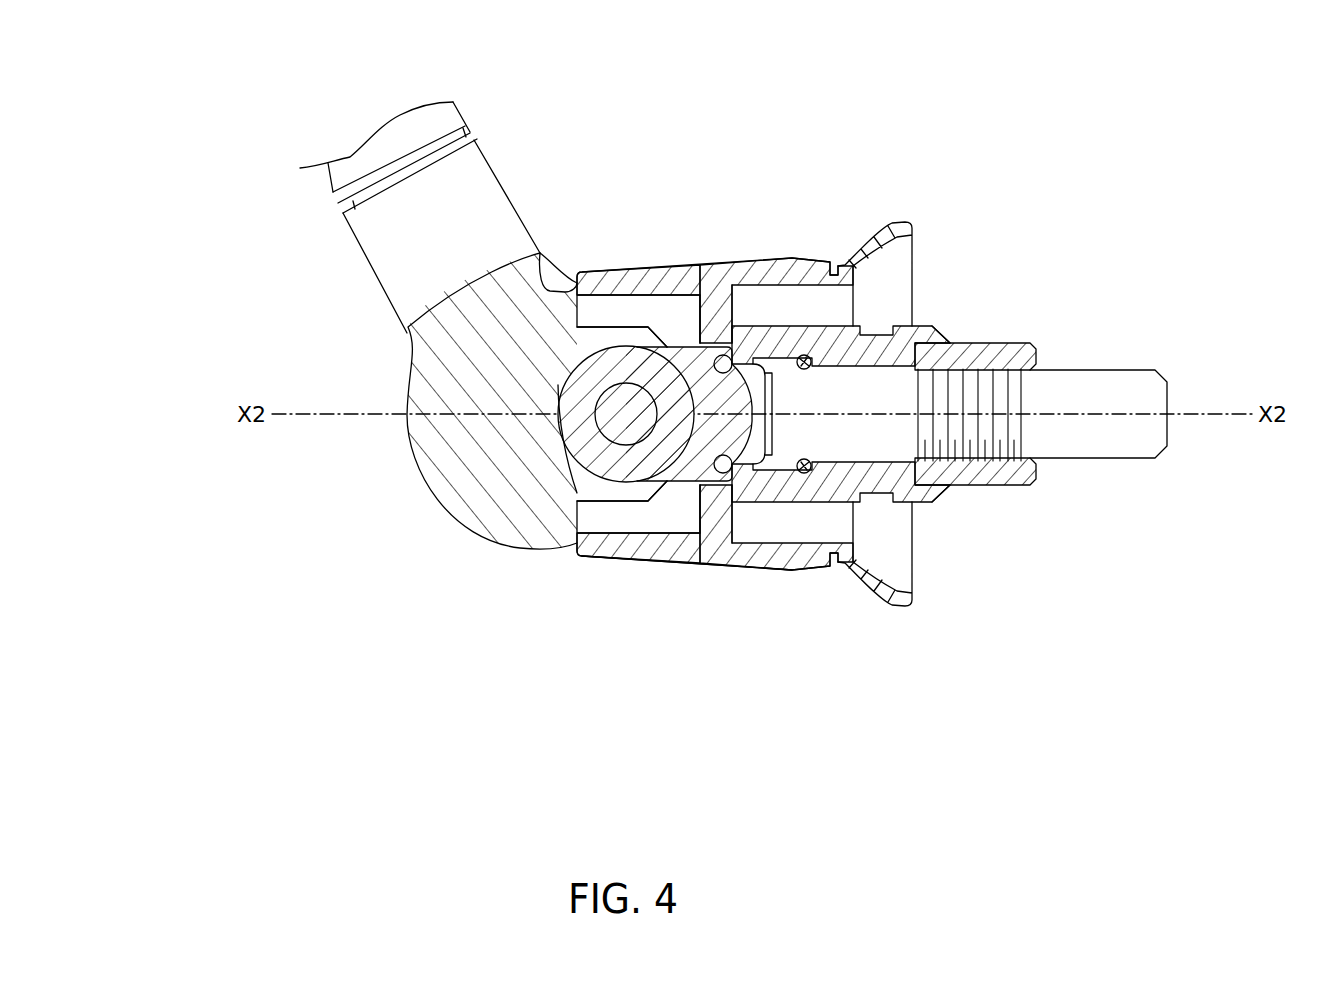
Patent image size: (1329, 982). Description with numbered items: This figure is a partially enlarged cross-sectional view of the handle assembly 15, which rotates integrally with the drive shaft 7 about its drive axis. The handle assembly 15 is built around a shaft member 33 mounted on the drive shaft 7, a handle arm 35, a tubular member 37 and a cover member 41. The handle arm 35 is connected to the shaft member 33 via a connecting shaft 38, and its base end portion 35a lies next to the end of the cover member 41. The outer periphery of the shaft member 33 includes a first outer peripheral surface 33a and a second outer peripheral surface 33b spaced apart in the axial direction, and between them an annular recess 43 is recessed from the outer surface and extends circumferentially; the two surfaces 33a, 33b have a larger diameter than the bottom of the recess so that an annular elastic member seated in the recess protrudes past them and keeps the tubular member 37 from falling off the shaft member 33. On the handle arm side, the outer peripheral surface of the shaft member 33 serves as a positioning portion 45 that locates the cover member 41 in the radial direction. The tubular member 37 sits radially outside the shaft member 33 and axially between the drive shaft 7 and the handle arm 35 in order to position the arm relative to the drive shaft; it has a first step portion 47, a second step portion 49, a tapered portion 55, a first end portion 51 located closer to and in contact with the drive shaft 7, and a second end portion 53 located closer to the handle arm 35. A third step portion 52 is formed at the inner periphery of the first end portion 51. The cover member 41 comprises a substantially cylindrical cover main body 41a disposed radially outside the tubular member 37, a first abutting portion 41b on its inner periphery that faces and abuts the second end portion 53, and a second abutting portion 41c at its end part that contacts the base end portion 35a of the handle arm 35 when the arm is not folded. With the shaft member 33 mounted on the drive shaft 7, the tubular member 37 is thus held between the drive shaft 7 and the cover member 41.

The drive shaft 7 is at (1013, 357).
The handle assembly 15 is at (1030, 134).
The shaft member 33 is at (1103, 470).
The first outer peripheral surface 33a is at (713, 520).
The second outer peripheral surface 33b is at (850, 505).
The handle arm 35 is at (350, 285).
The base end portion 35a is at (470, 487).
The tubular member 37 is at (925, 318).
The connecting shaft 38 is at (568, 447).
The cover member 41 is at (632, 258).
The cover main body 41a is at (612, 266).
The first abutting portion 41b is at (750, 330).
The second abutting portion 41c is at (575, 275).
The annular recess 43 is at (760, 543).
The positioning portion 45 is at (700, 568).
The first step portion 47 is at (708, 340).
The second step portion 49 is at (801, 353).
The first end portion 51 is at (950, 338).
The third step portion 52 is at (923, 470).
The second end portion 53 is at (766, 360).
The tapered portion 55 is at (724, 350).